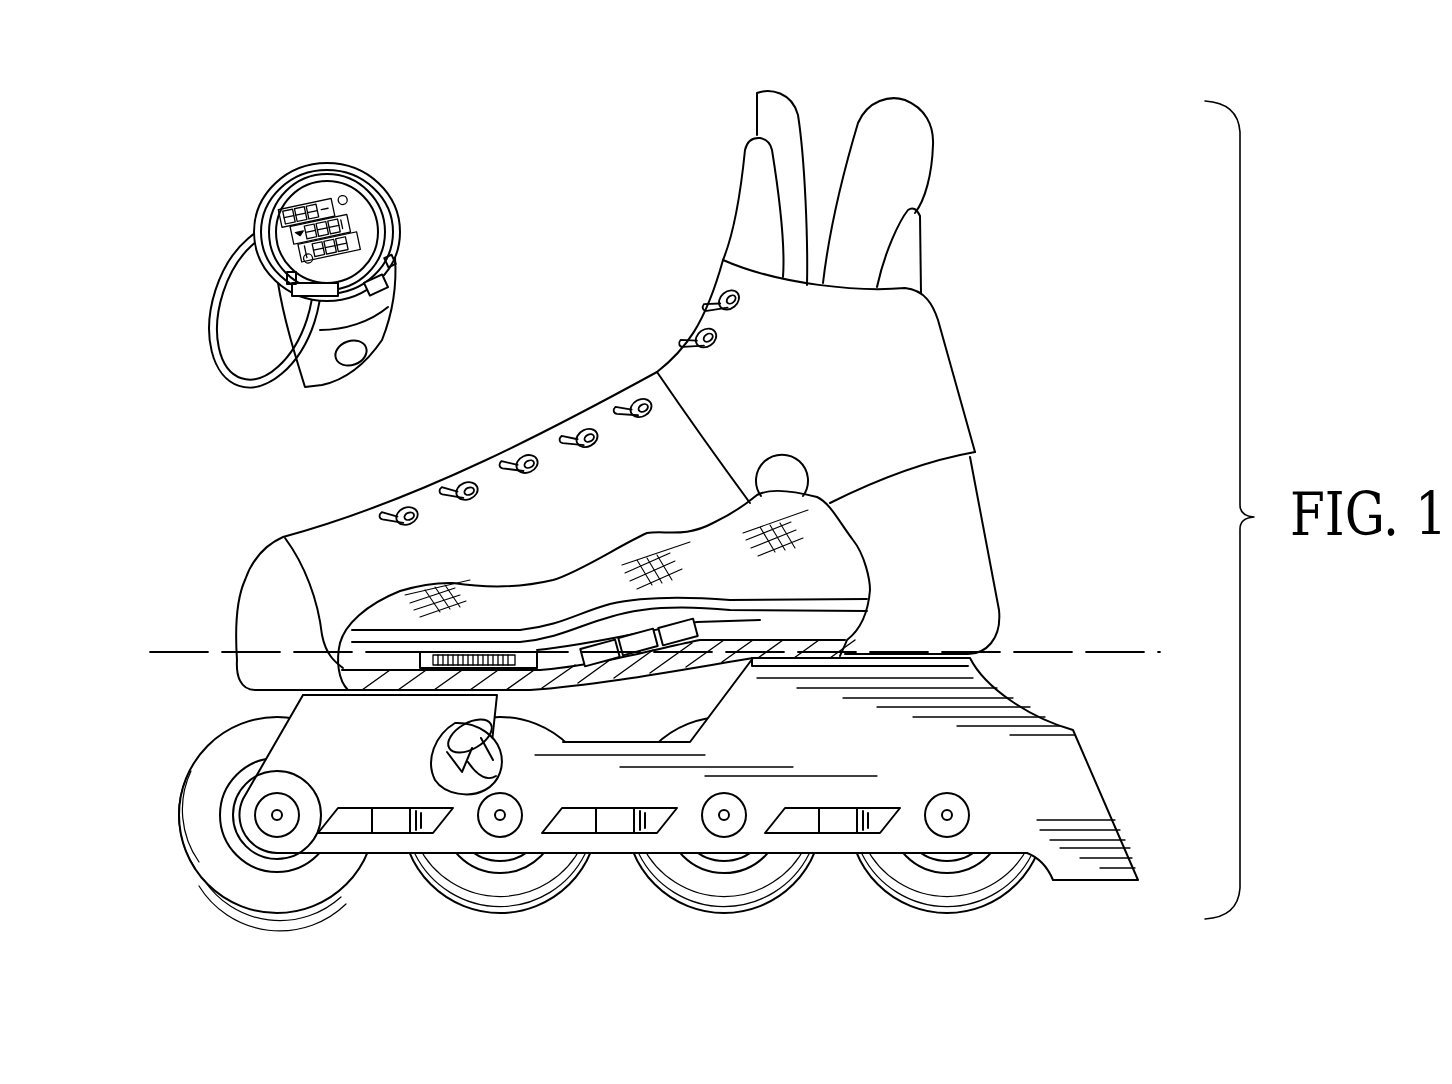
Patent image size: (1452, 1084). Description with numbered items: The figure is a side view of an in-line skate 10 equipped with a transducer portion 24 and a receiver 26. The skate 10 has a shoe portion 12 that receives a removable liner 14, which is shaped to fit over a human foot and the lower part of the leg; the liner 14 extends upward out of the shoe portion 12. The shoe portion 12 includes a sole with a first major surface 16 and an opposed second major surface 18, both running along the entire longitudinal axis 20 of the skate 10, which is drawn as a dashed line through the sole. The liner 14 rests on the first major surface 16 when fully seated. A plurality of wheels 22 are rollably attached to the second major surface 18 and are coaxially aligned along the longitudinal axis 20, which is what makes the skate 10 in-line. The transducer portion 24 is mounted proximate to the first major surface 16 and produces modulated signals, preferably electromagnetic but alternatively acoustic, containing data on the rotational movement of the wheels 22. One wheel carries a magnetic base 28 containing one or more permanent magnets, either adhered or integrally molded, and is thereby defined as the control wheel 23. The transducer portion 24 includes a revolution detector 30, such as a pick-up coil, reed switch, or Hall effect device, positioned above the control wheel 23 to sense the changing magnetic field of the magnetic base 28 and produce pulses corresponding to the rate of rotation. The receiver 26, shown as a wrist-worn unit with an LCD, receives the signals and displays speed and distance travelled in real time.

The in-line skate 10 is at (655, 514).
The shoe portion 12 is at (312, 527).
The removable liner 14 is at (920, 165).
The first major surface 16 is at (655, 649).
The second major surface 18 is at (714, 662).
The longitudinal axis 20 is at (1081, 650).
The wheels 22 is at (327, 900).
The control wheel 23 is at (550, 900).
The transducer portion 24 is at (556, 644).
The receiver 26 is at (396, 169).
The magnetic base 28 is at (446, 745).
The revolution detector 30 is at (517, 658).